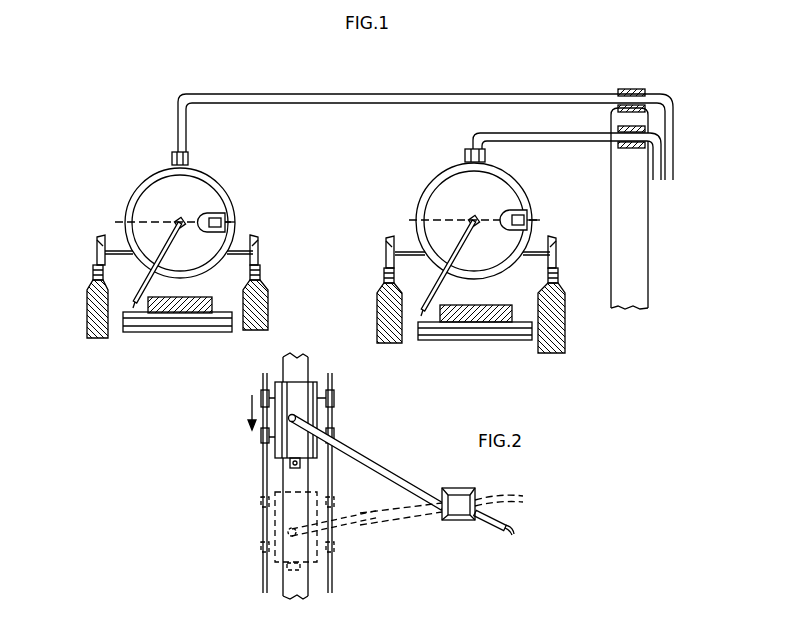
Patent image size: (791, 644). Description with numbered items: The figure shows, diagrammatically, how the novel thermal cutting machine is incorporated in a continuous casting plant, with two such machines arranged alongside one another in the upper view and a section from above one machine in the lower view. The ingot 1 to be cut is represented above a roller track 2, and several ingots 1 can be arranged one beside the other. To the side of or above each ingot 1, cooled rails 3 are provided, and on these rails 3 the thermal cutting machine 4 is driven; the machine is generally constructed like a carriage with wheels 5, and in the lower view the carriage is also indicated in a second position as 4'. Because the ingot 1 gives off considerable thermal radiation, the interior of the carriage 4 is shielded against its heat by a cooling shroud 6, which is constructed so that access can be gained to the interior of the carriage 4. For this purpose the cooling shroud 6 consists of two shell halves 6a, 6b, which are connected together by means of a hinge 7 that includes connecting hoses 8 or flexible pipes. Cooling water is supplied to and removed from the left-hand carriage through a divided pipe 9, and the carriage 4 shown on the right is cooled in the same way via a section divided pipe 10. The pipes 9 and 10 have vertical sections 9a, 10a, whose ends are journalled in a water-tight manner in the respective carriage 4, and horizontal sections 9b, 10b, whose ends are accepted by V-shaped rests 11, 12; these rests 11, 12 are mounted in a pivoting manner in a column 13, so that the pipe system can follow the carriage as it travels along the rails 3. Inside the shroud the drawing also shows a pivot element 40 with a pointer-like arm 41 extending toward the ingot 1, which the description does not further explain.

In FIG. 1, the ingot 1 is at (158, 305).
In FIG. 2, the ingot 1 is at (300, 598).
In FIG. 1, the roller track 2 is at (178, 325).
In FIG. 1, the cooled rails 3 is at (104, 277).
In FIG. 2, the cooled rails 3 is at (262, 478).
In FIG. 1, the thermal cutting machine 4 is at (341, 214).
In FIG. 2, the thermal cutting machine 4 is at (288, 407).
In FIG. 2, the housing in lowered position 4' is at (304, 531).
In FIG. 1, the wheels 5 is at (99, 240).
In FIG. 1, the cooling shroud 6 is at (150, 178).
In FIG. 1, the shell half 6a is at (222, 198).
In FIG. 1, the shell half 6b is at (208, 269).
In FIG. 1, the hinge 7 is at (236, 222).
In FIG. 1, the connecting hoses 8 is at (226, 215).
In FIG. 1, the divided pipe 9 is at (250, 93).
In FIG. 2, the divided pipe 9 is at (376, 455).
In FIG. 1, the vertical section 9a is at (187, 142).
In FIG. 1, the horizontal section 9b is at (402, 93).
In FIG. 1, the divided pipe 10 is at (497, 133).
In FIG. 1, the vertical section 10a is at (471, 147).
In FIG. 1, the horizontal section 10b is at (562, 133).
In FIG. 1, the V-shaped rest 11 is at (633, 89).
In FIG. 2, the V-shaped rest 11 is at (470, 489).
In FIG. 1, the V-shaped rest 12 is at (622, 141).
In FIG. 1, the column 13 is at (613, 300).
In FIG. 1, the pivot pin 40 is at (176, 218).
In FIG. 1, the pointer needle 41 is at (131, 291).